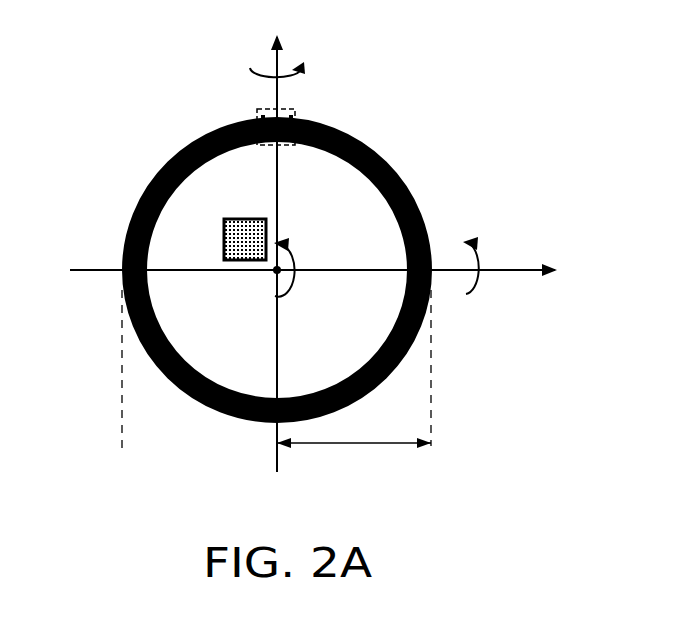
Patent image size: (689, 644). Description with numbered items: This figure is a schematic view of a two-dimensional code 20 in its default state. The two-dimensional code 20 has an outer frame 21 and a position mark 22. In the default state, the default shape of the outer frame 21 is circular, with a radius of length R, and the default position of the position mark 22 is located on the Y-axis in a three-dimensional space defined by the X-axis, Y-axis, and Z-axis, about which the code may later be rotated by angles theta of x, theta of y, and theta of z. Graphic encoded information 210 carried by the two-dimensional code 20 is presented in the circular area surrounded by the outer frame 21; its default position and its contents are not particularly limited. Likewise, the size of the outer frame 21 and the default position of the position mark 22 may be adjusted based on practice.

The two-dimensional code 20 is at (587, 495).
The outer frame 21 is at (408, 174).
The position mark 22 is at (258, 112).
The graphic encoded information 210 is at (240, 237).